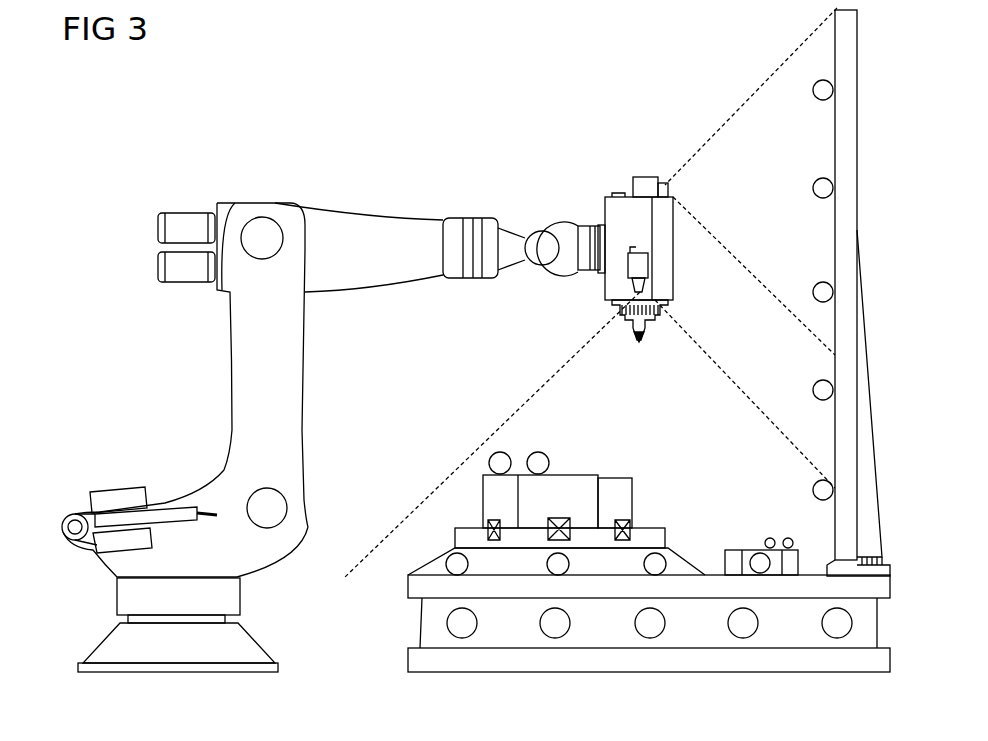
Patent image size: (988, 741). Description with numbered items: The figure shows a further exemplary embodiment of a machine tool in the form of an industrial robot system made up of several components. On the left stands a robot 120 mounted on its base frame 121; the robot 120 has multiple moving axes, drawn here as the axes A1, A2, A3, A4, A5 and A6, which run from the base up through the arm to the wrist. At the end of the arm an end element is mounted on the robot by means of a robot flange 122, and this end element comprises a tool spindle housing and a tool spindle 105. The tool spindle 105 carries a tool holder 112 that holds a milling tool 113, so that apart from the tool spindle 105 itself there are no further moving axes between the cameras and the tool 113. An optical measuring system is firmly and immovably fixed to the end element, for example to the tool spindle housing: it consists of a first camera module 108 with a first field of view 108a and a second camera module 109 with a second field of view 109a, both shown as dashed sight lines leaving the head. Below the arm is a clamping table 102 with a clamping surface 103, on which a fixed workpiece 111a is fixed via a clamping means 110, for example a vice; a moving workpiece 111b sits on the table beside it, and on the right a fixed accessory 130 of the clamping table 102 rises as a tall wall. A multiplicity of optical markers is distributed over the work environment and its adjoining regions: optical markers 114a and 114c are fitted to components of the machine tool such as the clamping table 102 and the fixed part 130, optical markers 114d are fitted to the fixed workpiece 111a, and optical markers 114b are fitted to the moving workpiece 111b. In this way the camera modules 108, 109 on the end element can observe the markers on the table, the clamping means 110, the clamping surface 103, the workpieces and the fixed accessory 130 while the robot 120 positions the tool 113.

The clamping table 102 is at (420, 648).
The clamping surface 103 is at (430, 548).
The tool spindle 105 is at (658, 223).
The first camera module 108 is at (645, 177).
The first field of view 108a is at (740, 108).
The second camera module 109 is at (652, 273).
The laser beam axis 109a is at (540, 385).
The clamping means 110 is at (470, 527).
The fixed workpiece 111a is at (645, 495).
The moving workpiece 111b is at (745, 550).
The tool holder 112 is at (647, 322).
The milling tool 113 is at (647, 338).
The optical markers 114a is at (457, 568).
The optical markers 114b is at (788, 538).
The optical markers 114c is at (821, 178).
The optical markers 114d is at (540, 452).
The robot 120 is at (300, 363).
The base frame 121 is at (253, 640).
The robot flange 122 is at (610, 197).
The fixed accessory 130 is at (835, 48).
The first robot axis A1 is at (183, 560).
The second moving axis A2 is at (287, 500).
The third robot axis A3 is at (253, 222).
The fourth moving axis A4 is at (488, 245).
The fifth moving axis A5 is at (546, 245).
The sixth moving axis A6 is at (586, 262).